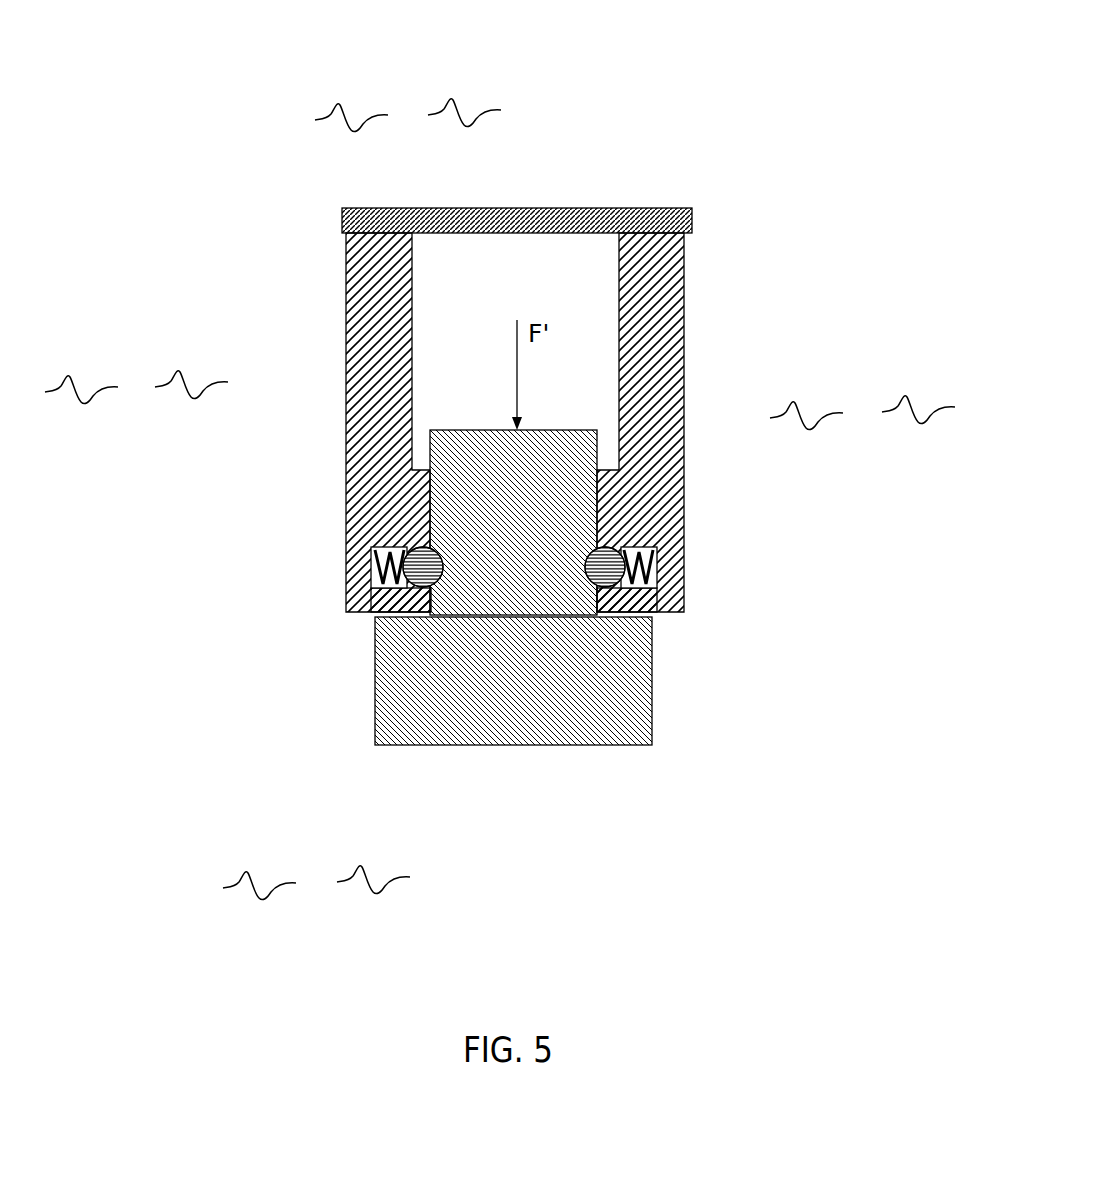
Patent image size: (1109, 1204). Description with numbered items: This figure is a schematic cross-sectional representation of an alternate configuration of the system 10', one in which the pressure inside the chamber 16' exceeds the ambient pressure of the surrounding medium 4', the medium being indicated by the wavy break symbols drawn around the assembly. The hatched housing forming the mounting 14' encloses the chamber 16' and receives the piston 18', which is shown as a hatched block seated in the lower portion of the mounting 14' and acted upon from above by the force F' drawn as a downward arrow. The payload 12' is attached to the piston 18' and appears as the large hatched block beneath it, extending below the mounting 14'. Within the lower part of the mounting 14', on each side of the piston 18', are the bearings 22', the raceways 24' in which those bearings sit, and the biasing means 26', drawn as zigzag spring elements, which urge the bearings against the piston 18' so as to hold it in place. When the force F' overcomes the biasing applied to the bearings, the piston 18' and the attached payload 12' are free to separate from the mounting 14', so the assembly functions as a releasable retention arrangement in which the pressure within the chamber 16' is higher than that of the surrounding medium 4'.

The system 10' is at (611, 119).
The payload 12' is at (590, 706).
The mounting 14' is at (430, 422).
The chamber 16' is at (457, 288).
The piston 18' is at (597, 477).
The bearings 22' is at (523, 638).
The raceways 24' is at (529, 516).
The biasing means 26' is at (509, 520).
The surrounding medium 4' is at (500, 499).